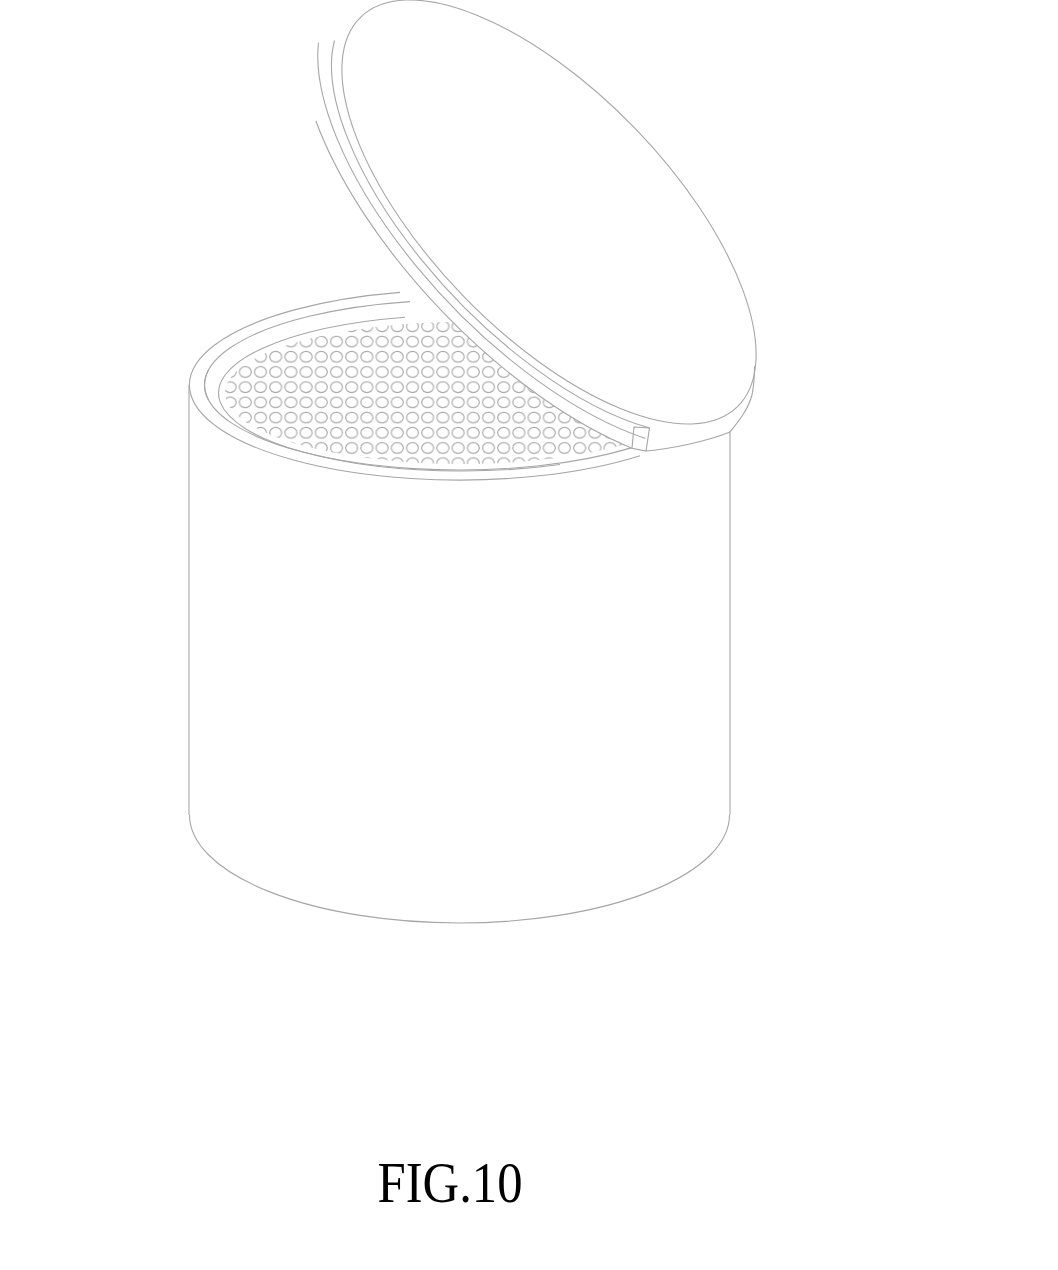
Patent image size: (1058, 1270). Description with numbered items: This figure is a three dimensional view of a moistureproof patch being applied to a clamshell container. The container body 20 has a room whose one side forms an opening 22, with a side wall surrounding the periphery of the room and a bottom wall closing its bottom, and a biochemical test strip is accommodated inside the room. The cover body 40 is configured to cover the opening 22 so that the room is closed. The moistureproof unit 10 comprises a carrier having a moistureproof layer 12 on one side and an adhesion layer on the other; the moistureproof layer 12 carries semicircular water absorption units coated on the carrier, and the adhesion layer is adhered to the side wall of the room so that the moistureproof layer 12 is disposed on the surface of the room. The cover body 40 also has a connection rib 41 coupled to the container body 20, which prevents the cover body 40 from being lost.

The moistureproof unit 10 is at (328, 362).
The moistureproof layer 12 is at (263, 387).
The container body 20 is at (693, 697).
The opening 22 is at (307, 460).
The cover body 40 is at (612, 163).
The connection rib 41 is at (690, 437).